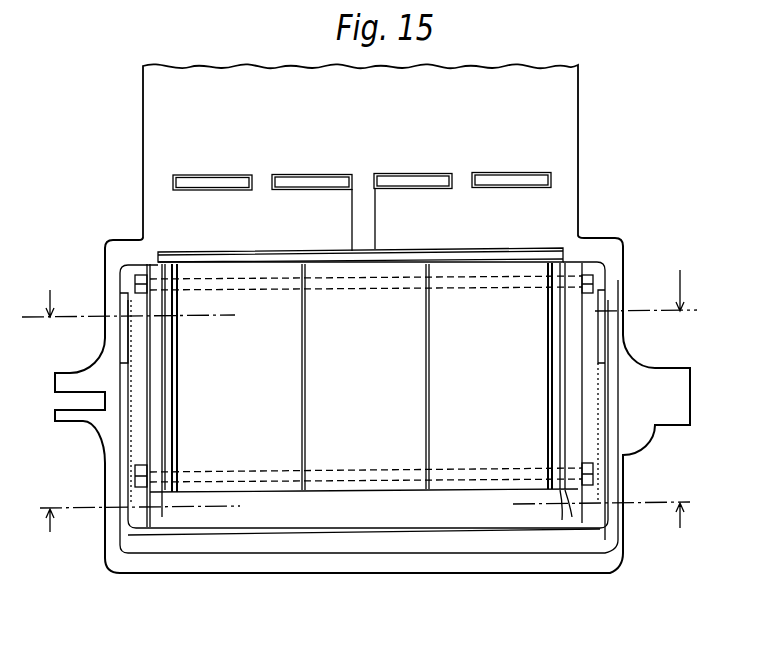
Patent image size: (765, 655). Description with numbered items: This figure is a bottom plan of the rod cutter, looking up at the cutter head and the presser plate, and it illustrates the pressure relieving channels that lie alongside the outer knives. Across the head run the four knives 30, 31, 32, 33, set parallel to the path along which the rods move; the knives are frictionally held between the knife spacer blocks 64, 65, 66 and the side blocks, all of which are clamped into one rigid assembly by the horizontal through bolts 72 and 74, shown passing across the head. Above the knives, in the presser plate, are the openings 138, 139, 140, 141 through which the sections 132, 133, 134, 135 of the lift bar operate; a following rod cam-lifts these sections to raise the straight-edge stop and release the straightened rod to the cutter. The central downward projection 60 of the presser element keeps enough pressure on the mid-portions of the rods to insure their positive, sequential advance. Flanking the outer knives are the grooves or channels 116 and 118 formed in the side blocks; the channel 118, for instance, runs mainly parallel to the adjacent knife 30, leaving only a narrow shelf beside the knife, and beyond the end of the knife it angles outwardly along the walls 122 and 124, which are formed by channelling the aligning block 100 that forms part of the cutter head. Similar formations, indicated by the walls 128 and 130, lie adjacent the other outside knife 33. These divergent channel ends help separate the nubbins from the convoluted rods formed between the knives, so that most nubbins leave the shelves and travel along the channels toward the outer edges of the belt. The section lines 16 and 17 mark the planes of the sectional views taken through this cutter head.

The section line 16- 16 is at (359, 281).
The section line 17- 17 is at (365, 537).
The knife 30 is at (552, 427).
The knife 31 is at (431, 441).
The knife 32 is at (306, 438).
The knife 33 is at (184, 435).
The central downward projection 60 is at (363, 231).
The knife spacer block 64 is at (246, 380).
The knife spacer block 65 is at (365, 380).
The knife spacer block 66 is at (486, 380).
The horizontal through bolt 72 is at (386, 475).
The horizontal through bolt 74 is at (383, 282).
The aligning block 100 is at (290, 513).
The channel 116 is at (153, 348).
The channel 118 is at (560, 325).
The channel wall 122 is at (565, 525).
The channel wall 124 is at (575, 515).
The channel wall 128 is at (168, 527).
The channel wall 130 is at (160, 520).
The lift bar section 132 is at (195, 183).
The lift bar section 133 is at (300, 183).
The lift bar section 134 is at (402, 181).
The lift bar section 135 is at (499, 181).
The presser plate opening 138 is at (222, 191).
The presser plate opening 139 is at (330, 190).
The presser plate opening 140 is at (422, 189).
The presser plate opening 141 is at (512, 189).